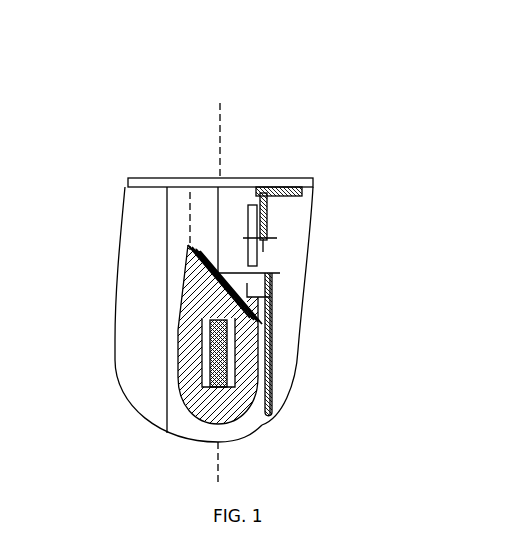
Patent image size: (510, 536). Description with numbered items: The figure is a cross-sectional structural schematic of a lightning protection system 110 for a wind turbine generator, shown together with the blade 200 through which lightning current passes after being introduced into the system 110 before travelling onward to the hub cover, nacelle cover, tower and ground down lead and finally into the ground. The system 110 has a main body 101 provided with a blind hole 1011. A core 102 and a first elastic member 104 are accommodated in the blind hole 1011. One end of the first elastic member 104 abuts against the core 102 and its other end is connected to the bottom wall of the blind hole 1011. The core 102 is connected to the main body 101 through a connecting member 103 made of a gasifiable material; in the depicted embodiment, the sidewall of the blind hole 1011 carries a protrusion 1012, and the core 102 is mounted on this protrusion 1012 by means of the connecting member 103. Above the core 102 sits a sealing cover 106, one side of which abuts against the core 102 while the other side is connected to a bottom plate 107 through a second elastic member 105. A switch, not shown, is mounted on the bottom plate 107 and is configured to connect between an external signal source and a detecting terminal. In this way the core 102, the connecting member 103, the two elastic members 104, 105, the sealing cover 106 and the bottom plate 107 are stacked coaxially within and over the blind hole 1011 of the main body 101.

The lightning protection system 110 is at (117, 128).
The blade 200 is at (160, 178).
The main body 101 is at (260, 287).
The blind hole 1011 is at (262, 425).
The protrusion 1012 is at (250, 296).
The core 102 is at (183, 270).
The connecting member 103 is at (180, 297).
The first elastic member 104 is at (235, 372).
The second elastic member 105 is at (260, 190).
The sealing cover 106 is at (265, 225).
The bottom plate 107 is at (215, 240).